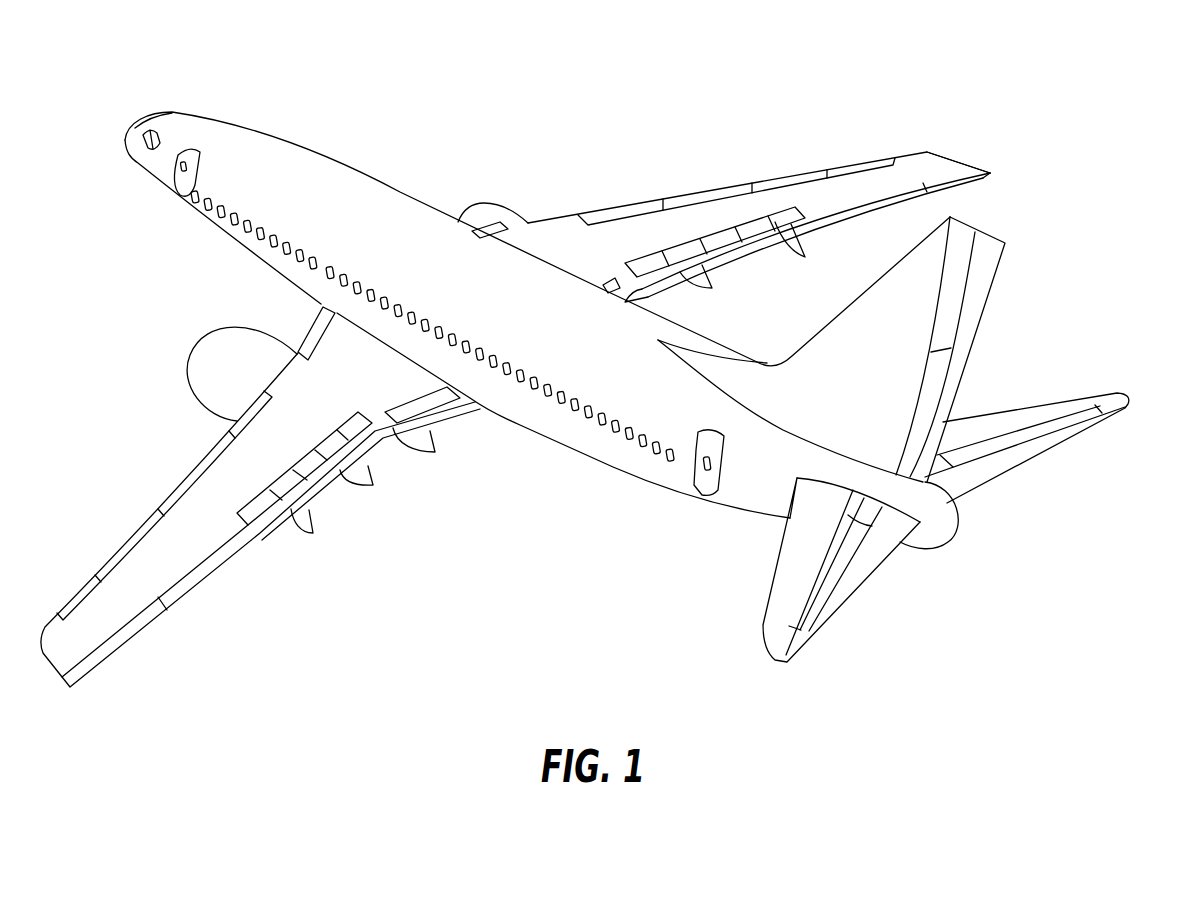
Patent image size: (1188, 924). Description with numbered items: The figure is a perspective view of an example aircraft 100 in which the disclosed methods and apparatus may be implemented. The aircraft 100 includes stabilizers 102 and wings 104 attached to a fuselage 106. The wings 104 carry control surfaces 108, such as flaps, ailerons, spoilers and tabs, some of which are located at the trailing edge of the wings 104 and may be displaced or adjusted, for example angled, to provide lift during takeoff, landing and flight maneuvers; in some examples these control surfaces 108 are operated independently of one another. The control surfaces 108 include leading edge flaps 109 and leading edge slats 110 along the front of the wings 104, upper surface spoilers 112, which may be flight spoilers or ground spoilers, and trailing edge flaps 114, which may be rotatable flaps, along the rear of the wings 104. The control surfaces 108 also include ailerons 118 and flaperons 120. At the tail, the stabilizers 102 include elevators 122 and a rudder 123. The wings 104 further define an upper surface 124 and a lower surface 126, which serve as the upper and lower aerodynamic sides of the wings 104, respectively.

The aircraft 100 is at (862, 53).
The stabilizers 102 is at (862, 320).
The wings 104 is at (876, 93).
The fuselage 106 is at (283, 150).
The control surfaces 108 is at (805, 195).
The leading edge flaps 109 is at (312, 338).
The leading edge slats 110 is at (710, 193).
The upper surface spoilers 112 is at (795, 222).
The trailing edge flaps 114 is at (722, 258).
The ailerons 118 is at (857, 211).
The flaperons 120 is at (663, 292).
The elevators 122 is at (1022, 455).
The rudder 123 is at (975, 318).
The upper surface 124 is at (935, 163).
The lower surface 126 is at (965, 182).